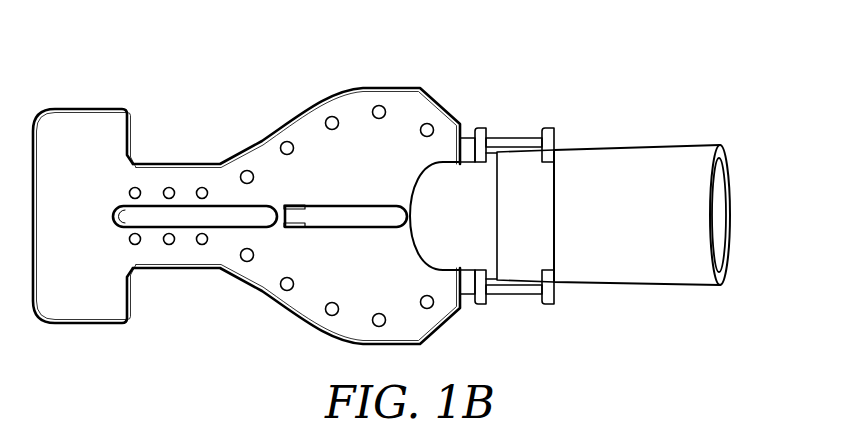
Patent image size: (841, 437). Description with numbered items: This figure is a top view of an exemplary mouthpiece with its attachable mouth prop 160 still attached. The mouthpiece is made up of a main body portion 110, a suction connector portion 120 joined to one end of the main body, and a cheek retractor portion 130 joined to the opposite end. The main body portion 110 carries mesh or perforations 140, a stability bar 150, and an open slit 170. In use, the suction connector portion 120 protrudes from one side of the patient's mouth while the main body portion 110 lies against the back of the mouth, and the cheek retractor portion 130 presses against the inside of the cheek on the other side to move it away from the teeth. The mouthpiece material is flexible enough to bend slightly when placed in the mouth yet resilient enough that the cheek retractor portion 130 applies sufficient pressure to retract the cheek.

The main body portion 110 is at (481, 80).
The suction connector portion 120 is at (511, 80).
The cheek retractor portion 130 is at (130, 80).
The mesh or perforations 140 is at (377, 325).
The stability bar 150 is at (167, 217).
The attachable mouth prop 160 is at (515, 137).
The open slit 170 is at (335, 206).